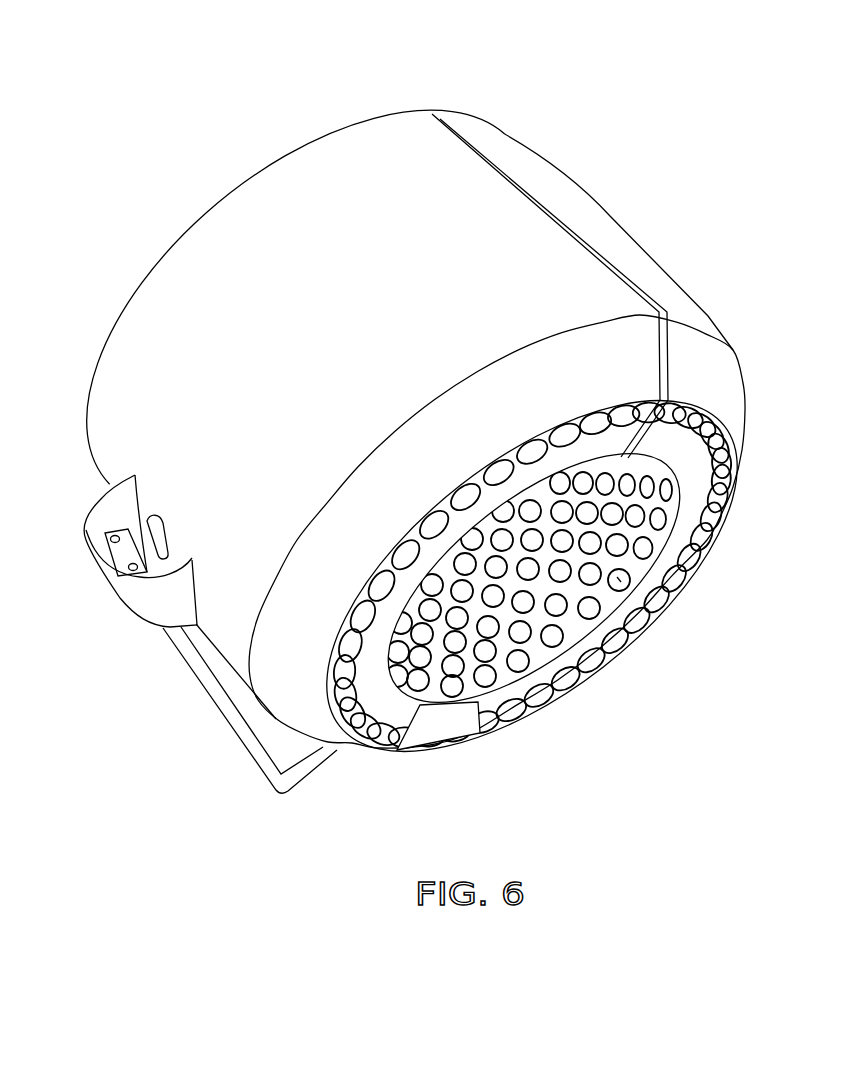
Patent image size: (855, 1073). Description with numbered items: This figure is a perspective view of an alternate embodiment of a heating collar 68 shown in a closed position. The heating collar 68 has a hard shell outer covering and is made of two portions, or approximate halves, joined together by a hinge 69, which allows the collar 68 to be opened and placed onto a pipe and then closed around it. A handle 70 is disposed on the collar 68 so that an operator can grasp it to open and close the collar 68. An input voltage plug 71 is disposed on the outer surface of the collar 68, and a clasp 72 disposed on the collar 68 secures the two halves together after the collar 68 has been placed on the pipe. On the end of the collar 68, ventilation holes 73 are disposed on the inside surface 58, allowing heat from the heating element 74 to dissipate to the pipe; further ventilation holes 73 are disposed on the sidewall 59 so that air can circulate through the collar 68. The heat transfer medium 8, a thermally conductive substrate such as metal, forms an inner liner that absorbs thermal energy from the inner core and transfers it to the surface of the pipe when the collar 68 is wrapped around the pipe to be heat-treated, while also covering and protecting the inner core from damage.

The heating collar 68 is at (130, 270).
The hinge 69 is at (445, 112).
The sidewall 59 is at (697, 487).
The ventilation holes 73 is at (645, 623).
The inside surface 58 is at (542, 662).
The heat transfer medium 8 is at (518, 671).
The heating element 74 is at (618, 590).
The clasp 72 is at (423, 742).
The input voltage plug 71 is at (87, 507).
The handle 70 is at (205, 712).